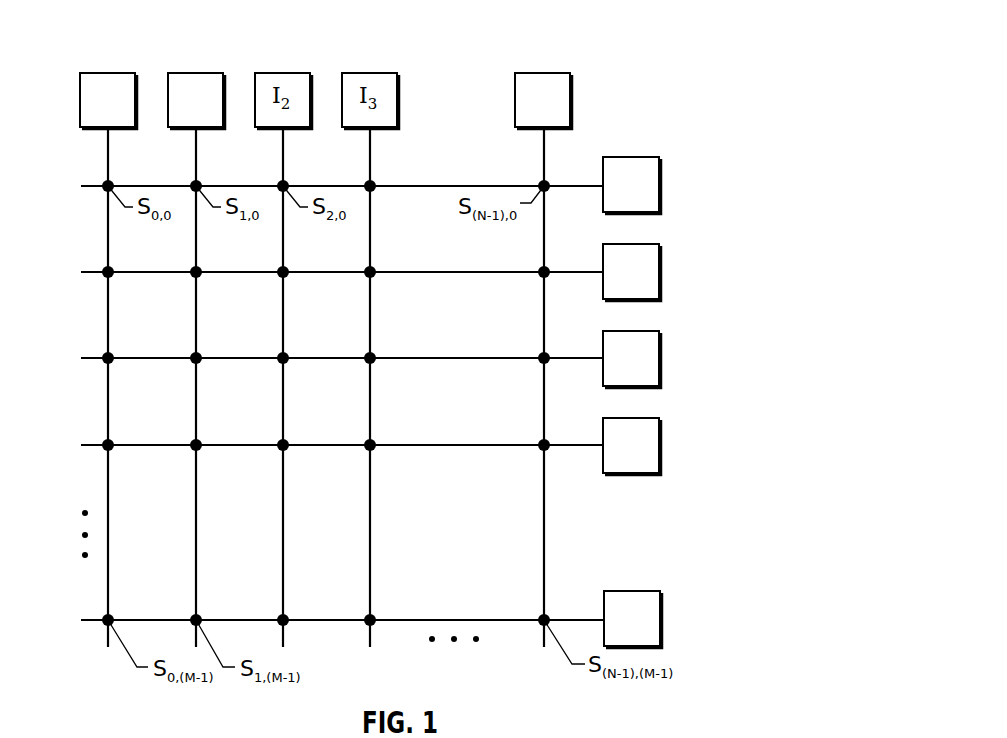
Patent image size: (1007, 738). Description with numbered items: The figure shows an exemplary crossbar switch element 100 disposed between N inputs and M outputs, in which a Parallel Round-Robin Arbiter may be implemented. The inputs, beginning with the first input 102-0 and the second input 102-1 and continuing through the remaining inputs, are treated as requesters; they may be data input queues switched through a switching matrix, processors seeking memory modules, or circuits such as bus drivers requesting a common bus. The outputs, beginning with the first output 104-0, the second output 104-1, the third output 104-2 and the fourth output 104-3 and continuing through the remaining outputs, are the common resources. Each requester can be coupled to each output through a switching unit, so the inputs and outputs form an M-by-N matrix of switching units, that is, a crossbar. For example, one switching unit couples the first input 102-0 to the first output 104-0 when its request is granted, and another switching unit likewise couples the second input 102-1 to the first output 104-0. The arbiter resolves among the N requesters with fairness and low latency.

The crossbar switch element 100 is at (750, 74).
The input I0 102-0 is at (81, 84).
The input I1 102-1 is at (167, 84).
The output O0 104-0 is at (685, 183).
The output O1 104-1 is at (685, 270).
The output O2 104-2 is at (685, 357).
The output O3 104-3 is at (685, 445).